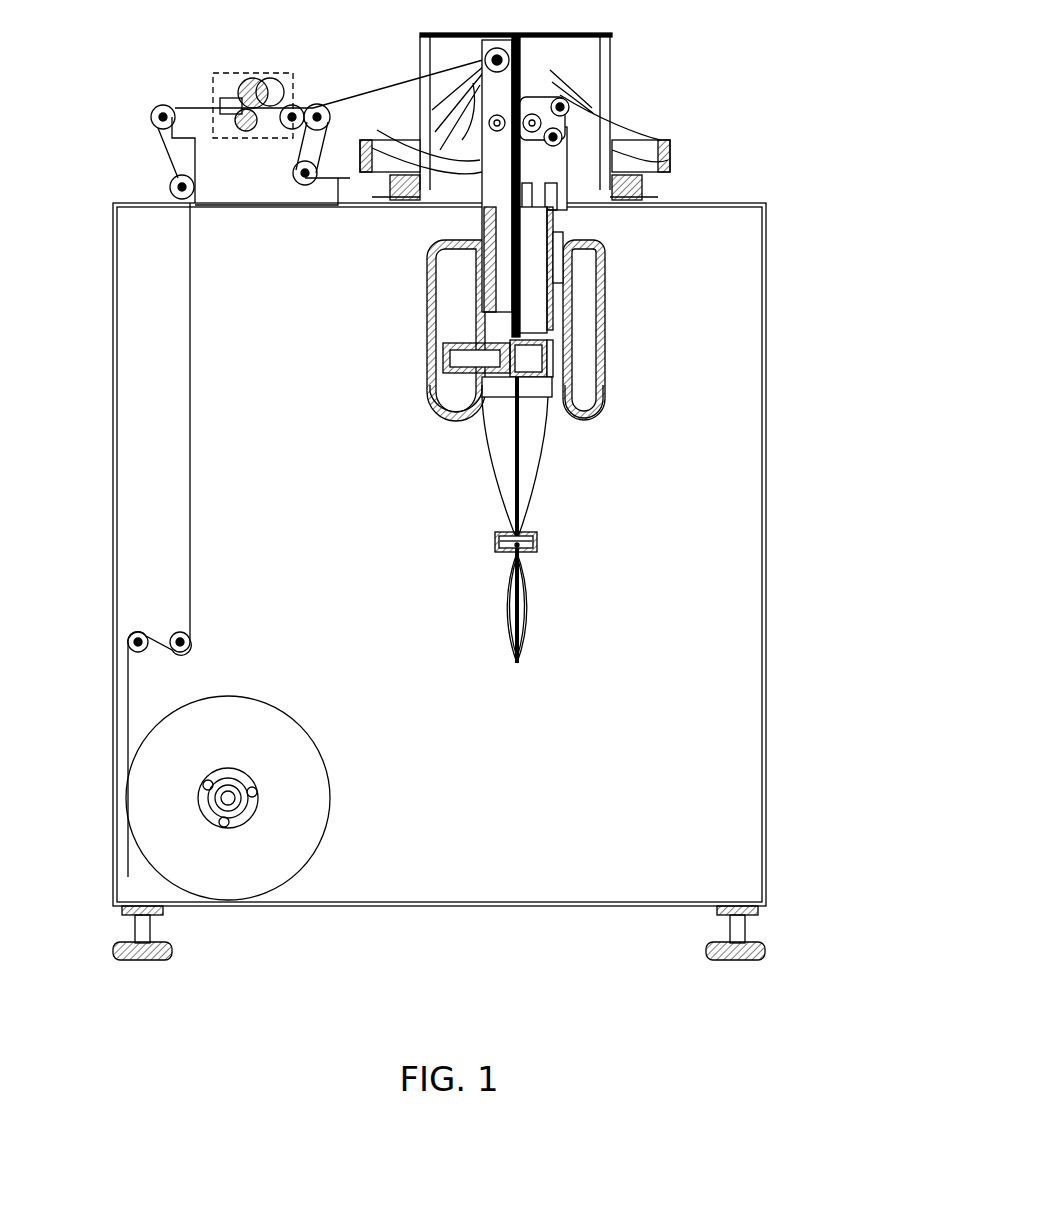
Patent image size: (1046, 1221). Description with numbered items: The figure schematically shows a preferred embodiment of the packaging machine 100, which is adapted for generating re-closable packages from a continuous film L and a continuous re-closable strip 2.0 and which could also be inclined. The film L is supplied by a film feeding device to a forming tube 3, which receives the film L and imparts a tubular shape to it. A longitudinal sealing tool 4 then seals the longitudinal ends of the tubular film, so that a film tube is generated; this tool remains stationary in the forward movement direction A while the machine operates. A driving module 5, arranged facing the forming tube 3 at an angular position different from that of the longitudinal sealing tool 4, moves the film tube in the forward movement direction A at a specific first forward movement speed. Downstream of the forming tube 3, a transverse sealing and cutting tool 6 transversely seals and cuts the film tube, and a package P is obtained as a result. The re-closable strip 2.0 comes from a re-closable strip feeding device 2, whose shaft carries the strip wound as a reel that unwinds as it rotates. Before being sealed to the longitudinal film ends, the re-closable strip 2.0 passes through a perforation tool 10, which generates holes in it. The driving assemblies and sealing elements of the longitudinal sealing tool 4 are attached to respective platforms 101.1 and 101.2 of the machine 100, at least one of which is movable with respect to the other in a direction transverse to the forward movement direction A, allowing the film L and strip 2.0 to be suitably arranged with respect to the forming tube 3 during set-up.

The packaging machine 100 is at (724, 124).
The perforation tool 10 is at (213, 97).
The continuous film L is at (400, 135).
The forming tube 3 is at (562, 60).
The longitudinal sealing tool 4 is at (483, 275).
The platform 101.1 is at (587, 293).
The platform 101.2 is at (463, 315).
The driving module 5 is at (453, 397).
The forward movement direction A is at (582, 440).
The continuous re-closable strip 2.0 is at (192, 467).
The transverse sealing and cutting tool 6 is at (541, 542).
The package P is at (535, 623).
The re-closable strip feeding device 2 is at (272, 776).